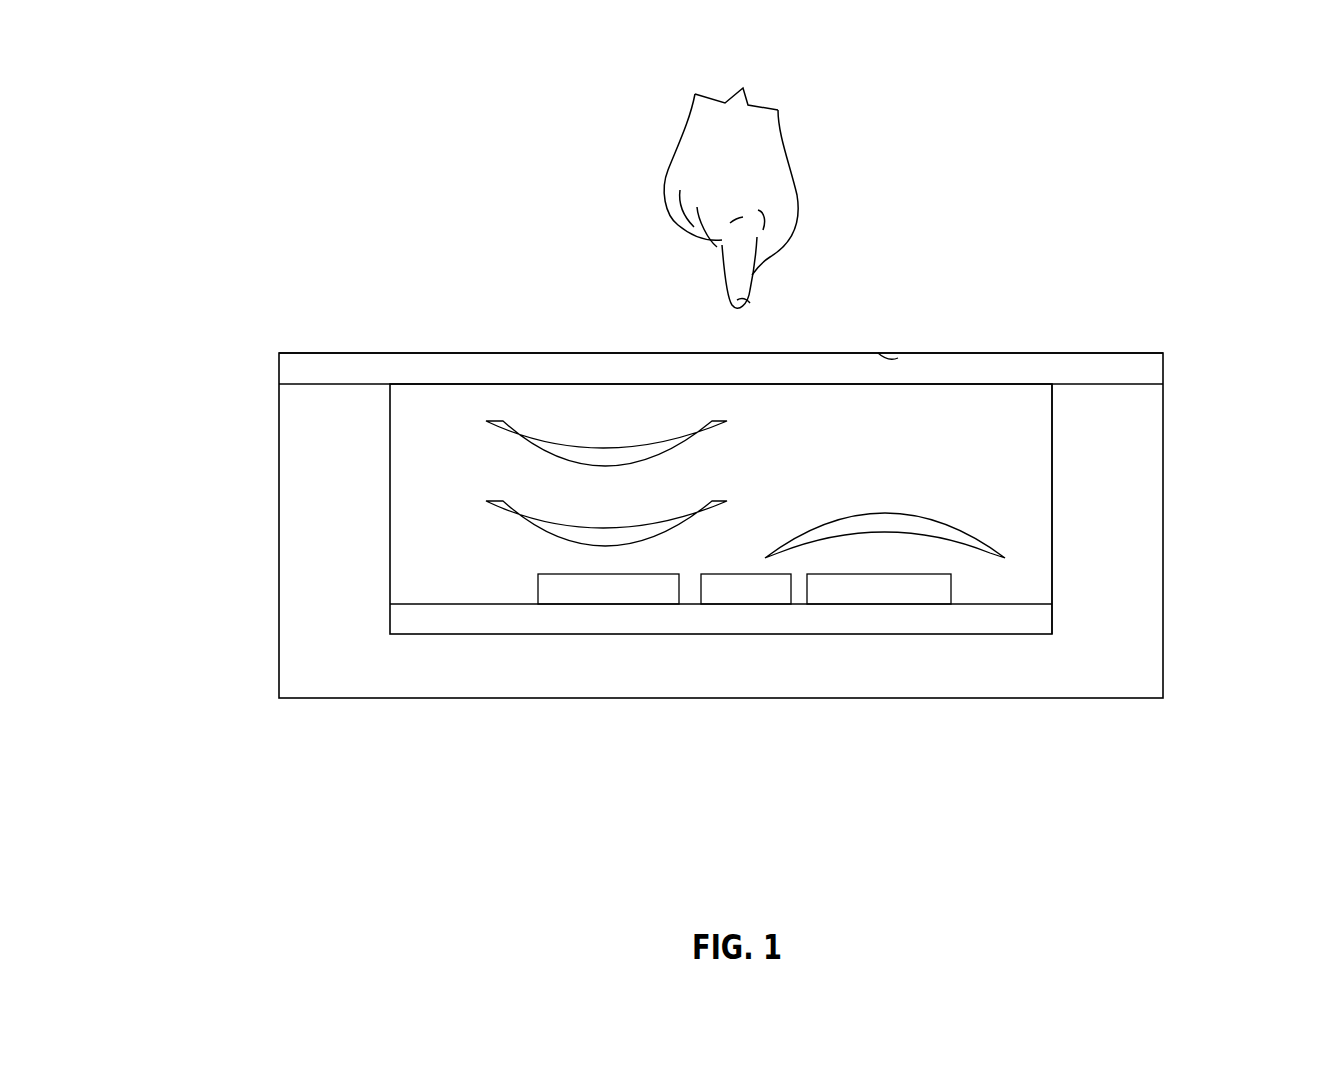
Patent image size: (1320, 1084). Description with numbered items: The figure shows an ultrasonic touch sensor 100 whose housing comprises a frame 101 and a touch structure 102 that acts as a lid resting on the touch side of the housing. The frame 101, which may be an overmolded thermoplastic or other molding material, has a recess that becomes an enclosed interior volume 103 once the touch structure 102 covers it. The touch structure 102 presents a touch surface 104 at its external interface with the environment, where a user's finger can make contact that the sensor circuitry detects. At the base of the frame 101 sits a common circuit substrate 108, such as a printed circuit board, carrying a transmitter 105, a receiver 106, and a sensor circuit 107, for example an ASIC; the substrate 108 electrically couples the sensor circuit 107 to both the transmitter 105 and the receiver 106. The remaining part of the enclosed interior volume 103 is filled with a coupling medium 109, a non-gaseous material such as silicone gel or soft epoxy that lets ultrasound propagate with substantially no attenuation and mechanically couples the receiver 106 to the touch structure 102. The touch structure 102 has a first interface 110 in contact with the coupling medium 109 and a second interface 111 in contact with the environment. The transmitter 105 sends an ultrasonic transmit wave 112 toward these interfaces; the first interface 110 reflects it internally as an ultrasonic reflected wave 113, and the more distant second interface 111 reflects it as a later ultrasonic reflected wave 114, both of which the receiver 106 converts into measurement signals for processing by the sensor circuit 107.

The ultrasonic touch sensor 100 is at (255, 70).
The frame 101 is at (357, 510).
The touch structure 102 is at (1164, 370).
The enclosed interior volume 103 is at (434, 452).
The touch surface 104 is at (990, 353).
The transmitter 105 is at (877, 604).
The receiver 106 is at (607, 604).
The sensor circuit 107 is at (735, 604).
The common circuit substrate 108 is at (998, 617).
The coupling medium 109 is at (1010, 503).
The first interface 110 is at (444, 384).
The second interface 111 is at (906, 352).
The ultrasonic transmit wave 112 is at (910, 512).
The ultrasonic reflected wave 113 is at (510, 533).
The ultrasonic reflected wave 114 is at (487, 427).